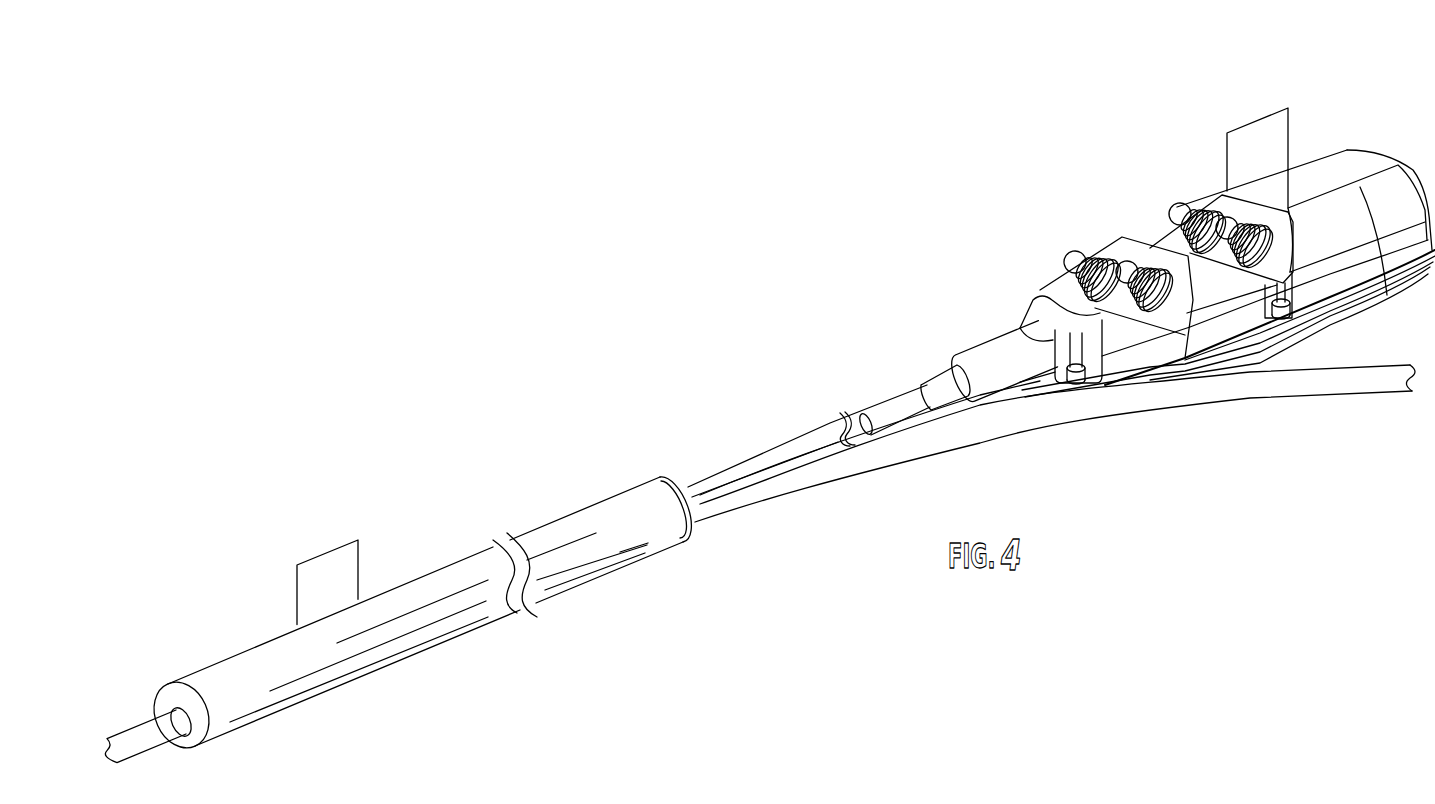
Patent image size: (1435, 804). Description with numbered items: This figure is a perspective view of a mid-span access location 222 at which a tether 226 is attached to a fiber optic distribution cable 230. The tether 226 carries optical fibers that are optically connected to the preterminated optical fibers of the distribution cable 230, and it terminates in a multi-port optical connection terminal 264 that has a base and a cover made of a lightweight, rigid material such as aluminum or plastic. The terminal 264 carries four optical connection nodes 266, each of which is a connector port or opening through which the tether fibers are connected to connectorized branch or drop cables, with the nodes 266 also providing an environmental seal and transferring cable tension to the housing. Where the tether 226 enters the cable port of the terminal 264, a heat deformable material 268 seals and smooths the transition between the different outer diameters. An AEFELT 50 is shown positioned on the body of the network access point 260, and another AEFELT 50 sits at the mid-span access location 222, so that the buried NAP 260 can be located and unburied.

The AEFELT 50 is at (792, 366).
The mid-span access location 222 is at (197, 768).
The tether 226 is at (857, 418).
The distribution cable 230 is at (123, 738).
The network access point 260 is at (1381, 144).
The multi-port optical connection terminal 264 is at (1333, 170).
The optical connection node 266 is at (1100, 240).
The heat deformable material 268 is at (972, 370).